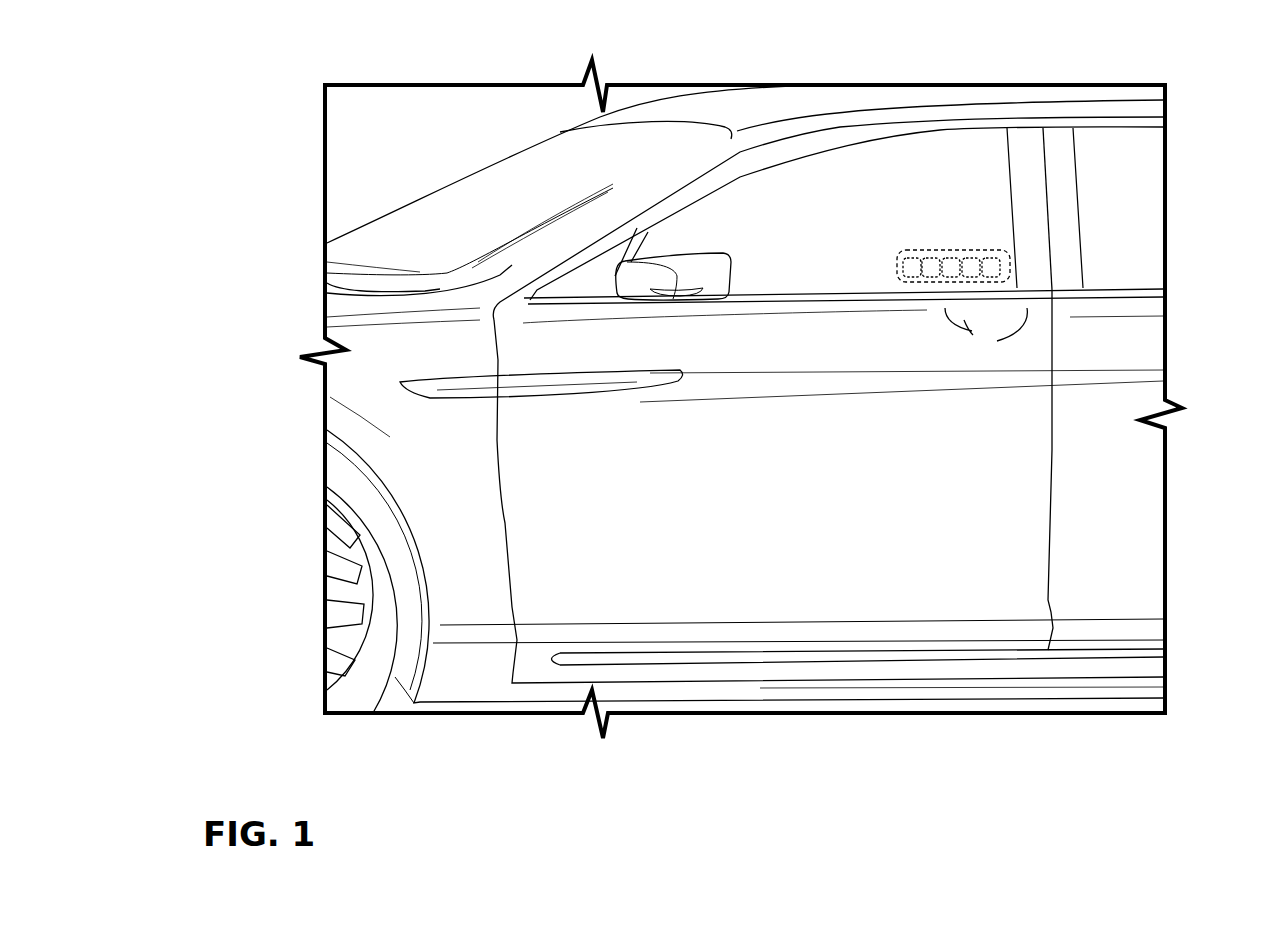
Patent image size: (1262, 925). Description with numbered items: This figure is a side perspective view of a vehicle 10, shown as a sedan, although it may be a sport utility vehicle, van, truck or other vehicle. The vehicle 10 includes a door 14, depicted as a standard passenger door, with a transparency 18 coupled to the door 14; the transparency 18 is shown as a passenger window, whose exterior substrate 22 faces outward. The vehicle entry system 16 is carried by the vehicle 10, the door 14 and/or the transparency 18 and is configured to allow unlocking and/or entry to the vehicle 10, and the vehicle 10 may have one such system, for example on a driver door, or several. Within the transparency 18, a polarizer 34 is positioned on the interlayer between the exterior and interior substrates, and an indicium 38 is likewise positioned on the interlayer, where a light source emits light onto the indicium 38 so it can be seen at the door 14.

The vehicle 10 is at (1110, 184).
The door 14 is at (978, 755).
The vehicle entry system 16 is at (986, 218).
The transparency 18 is at (807, 178).
The exterior substrate 22 is at (822, 257).
The polarizer 34 is at (897, 264).
The indicium 38 is at (996, 250).